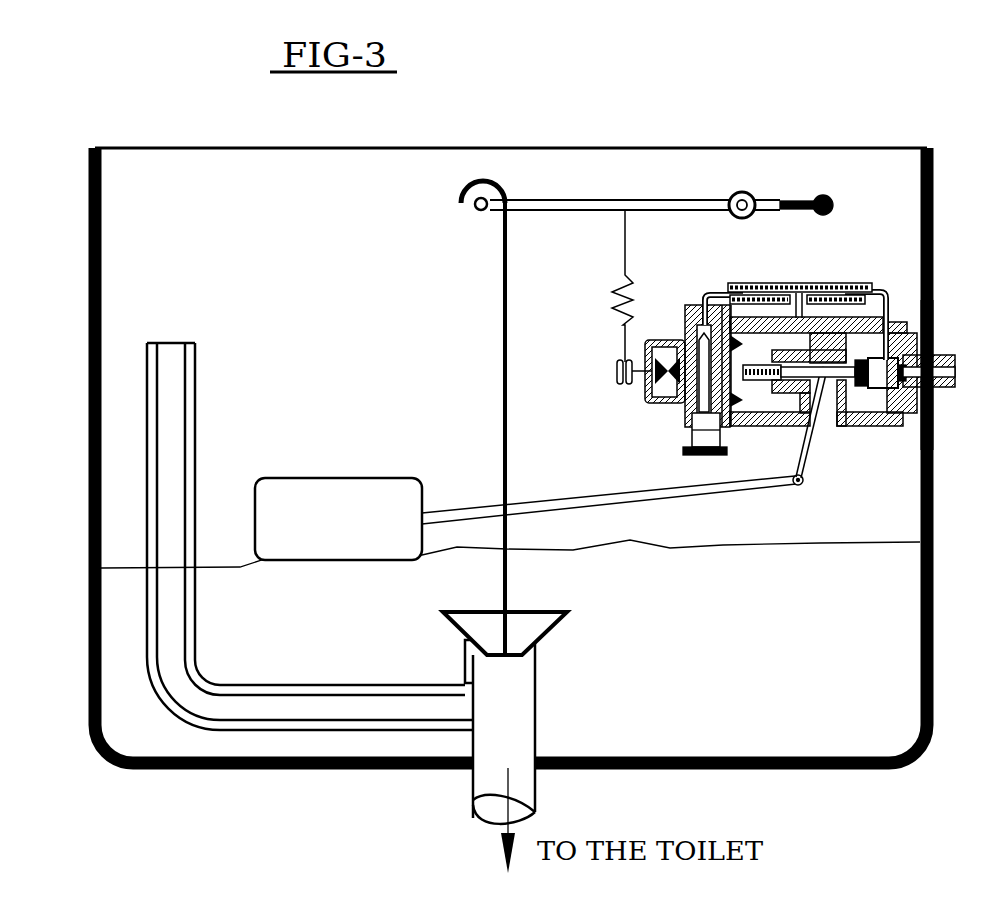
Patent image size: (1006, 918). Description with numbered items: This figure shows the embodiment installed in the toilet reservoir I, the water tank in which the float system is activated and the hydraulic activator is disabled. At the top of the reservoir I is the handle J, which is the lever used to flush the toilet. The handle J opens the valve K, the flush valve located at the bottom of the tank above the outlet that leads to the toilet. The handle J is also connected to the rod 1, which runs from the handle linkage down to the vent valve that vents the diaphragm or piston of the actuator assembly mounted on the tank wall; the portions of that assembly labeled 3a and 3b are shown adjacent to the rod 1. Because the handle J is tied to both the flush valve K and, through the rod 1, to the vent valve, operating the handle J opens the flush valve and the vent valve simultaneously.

The toilet reservoir I is at (920, 147).
The handle J is at (812, 195).
The rod 1 is at (614, 366).
The upper conduit of valve 3a is at (767, 310).
The valve body 3b is at (738, 423).
The valve K is at (530, 620).